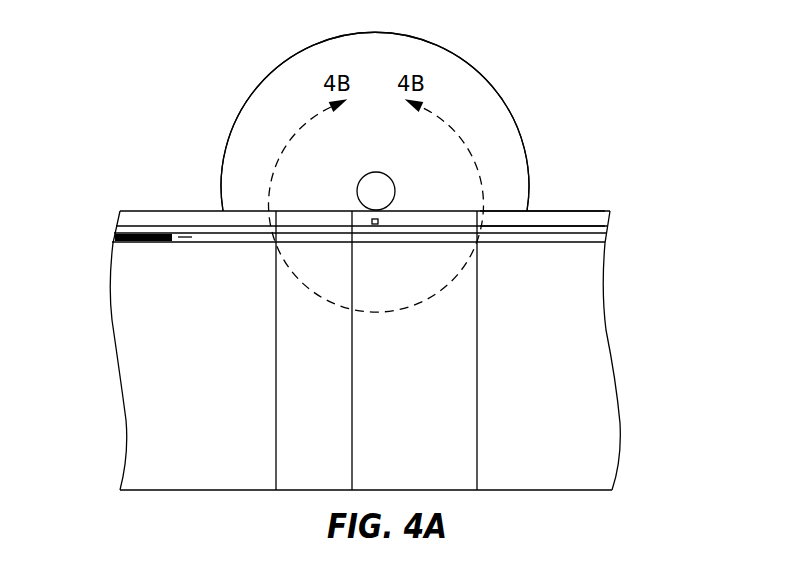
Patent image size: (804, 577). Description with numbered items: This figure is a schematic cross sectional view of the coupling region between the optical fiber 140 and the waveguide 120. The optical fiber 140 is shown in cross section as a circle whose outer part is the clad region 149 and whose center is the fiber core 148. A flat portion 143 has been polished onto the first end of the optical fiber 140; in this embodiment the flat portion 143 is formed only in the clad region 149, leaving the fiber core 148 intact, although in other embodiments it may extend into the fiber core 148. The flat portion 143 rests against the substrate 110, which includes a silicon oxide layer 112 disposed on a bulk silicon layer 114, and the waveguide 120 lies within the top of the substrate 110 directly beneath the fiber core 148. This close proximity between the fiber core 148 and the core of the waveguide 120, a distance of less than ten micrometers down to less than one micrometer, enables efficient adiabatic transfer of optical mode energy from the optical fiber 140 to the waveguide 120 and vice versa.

The substrate 110 is at (82, 211).
The silicon oxide layer 112 is at (597, 222).
The bulk silicon layer 114 is at (593, 362).
The waveguide 120 is at (375, 225).
The optical fiber 140 is at (237, 118).
The flat portion 143 is at (516, 199).
The fiber core 148 is at (380, 191).
The clad region 149 is at (288, 93).